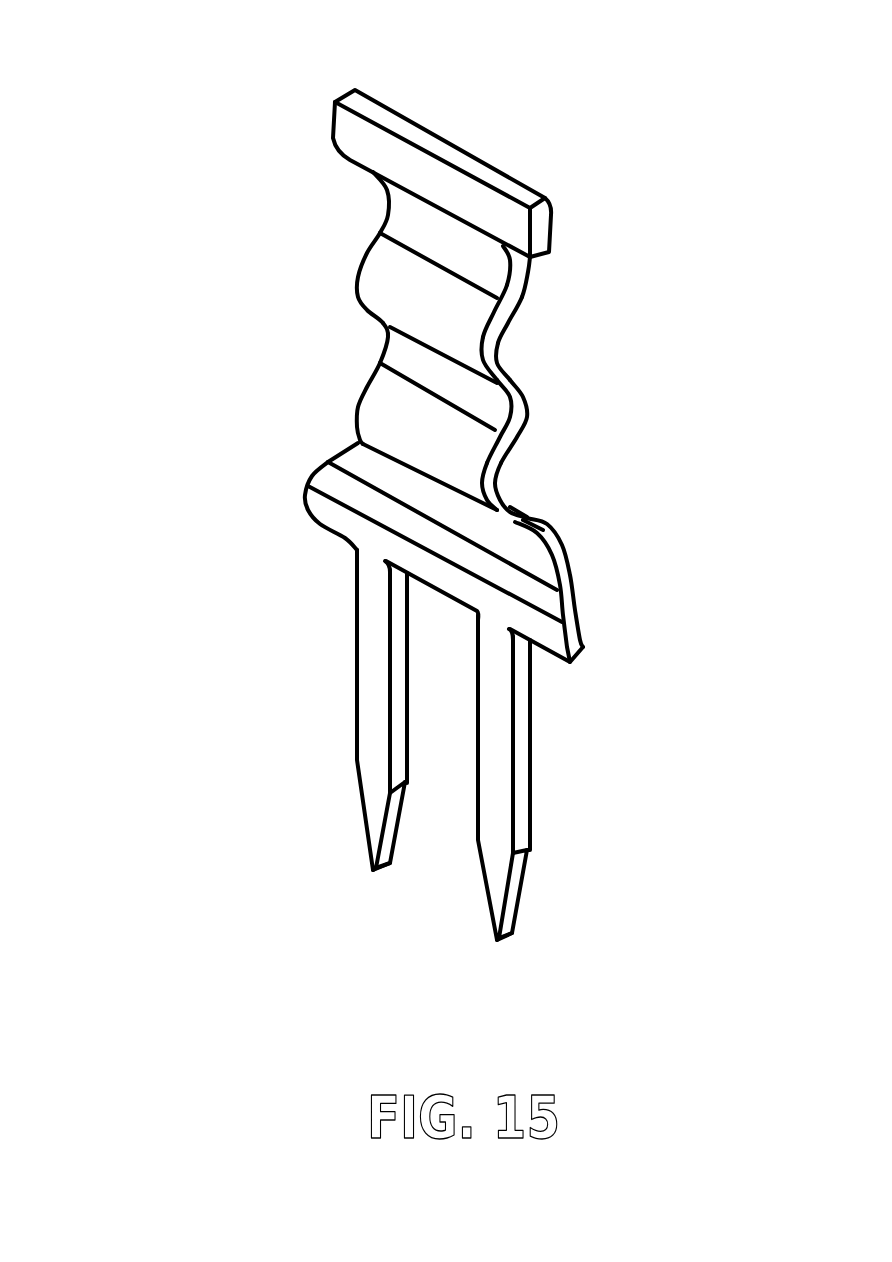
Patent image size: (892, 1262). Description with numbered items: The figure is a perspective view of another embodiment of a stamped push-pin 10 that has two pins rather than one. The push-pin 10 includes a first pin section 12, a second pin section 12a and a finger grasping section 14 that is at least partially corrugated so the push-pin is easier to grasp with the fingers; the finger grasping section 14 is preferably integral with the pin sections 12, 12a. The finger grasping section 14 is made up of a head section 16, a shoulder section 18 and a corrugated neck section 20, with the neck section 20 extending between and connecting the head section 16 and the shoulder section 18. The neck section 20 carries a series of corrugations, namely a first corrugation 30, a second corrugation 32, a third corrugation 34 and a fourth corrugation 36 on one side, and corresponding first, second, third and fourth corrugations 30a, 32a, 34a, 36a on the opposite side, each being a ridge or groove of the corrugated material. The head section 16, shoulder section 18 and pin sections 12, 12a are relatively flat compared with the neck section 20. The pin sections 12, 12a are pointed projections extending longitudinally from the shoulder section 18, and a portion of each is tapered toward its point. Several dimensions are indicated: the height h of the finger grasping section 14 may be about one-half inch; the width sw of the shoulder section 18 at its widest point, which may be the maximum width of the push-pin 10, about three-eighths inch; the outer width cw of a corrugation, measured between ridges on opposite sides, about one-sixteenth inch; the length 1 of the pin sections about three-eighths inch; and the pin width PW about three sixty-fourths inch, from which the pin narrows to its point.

The push-pin 10 is at (480, 328).
The first pin section 12 is at (372, 873).
The second pin section 12a is at (442, 897).
The finger grasping section 14 is at (337, 100).
The head section 16 is at (442, 173).
The shoulder section 18 is at (444, 552).
The corrugated neck section 20 is at (527, 505).
The first corrugation 30 is at (358, 407).
The first corrugation 30a is at (500, 477).
The second corrugation 32 is at (527, 411).
The second corrugation 32a is at (385, 347).
The third corrugation 34 is at (357, 277).
The third corrugation 34a is at (497, 347).
The fourth corrugation 36 is at (530, 272).
The fourth corrugation 36a is at (385, 195).
The length of the pin section 1 is at (177, 873).
The height of the finger grasping section h is at (163, 100).
The outer width of a corrugation cw is at (390, 103).
The width of the shoulder section sw is at (302, 505).
The width of the pin section PW is at (390, 993).